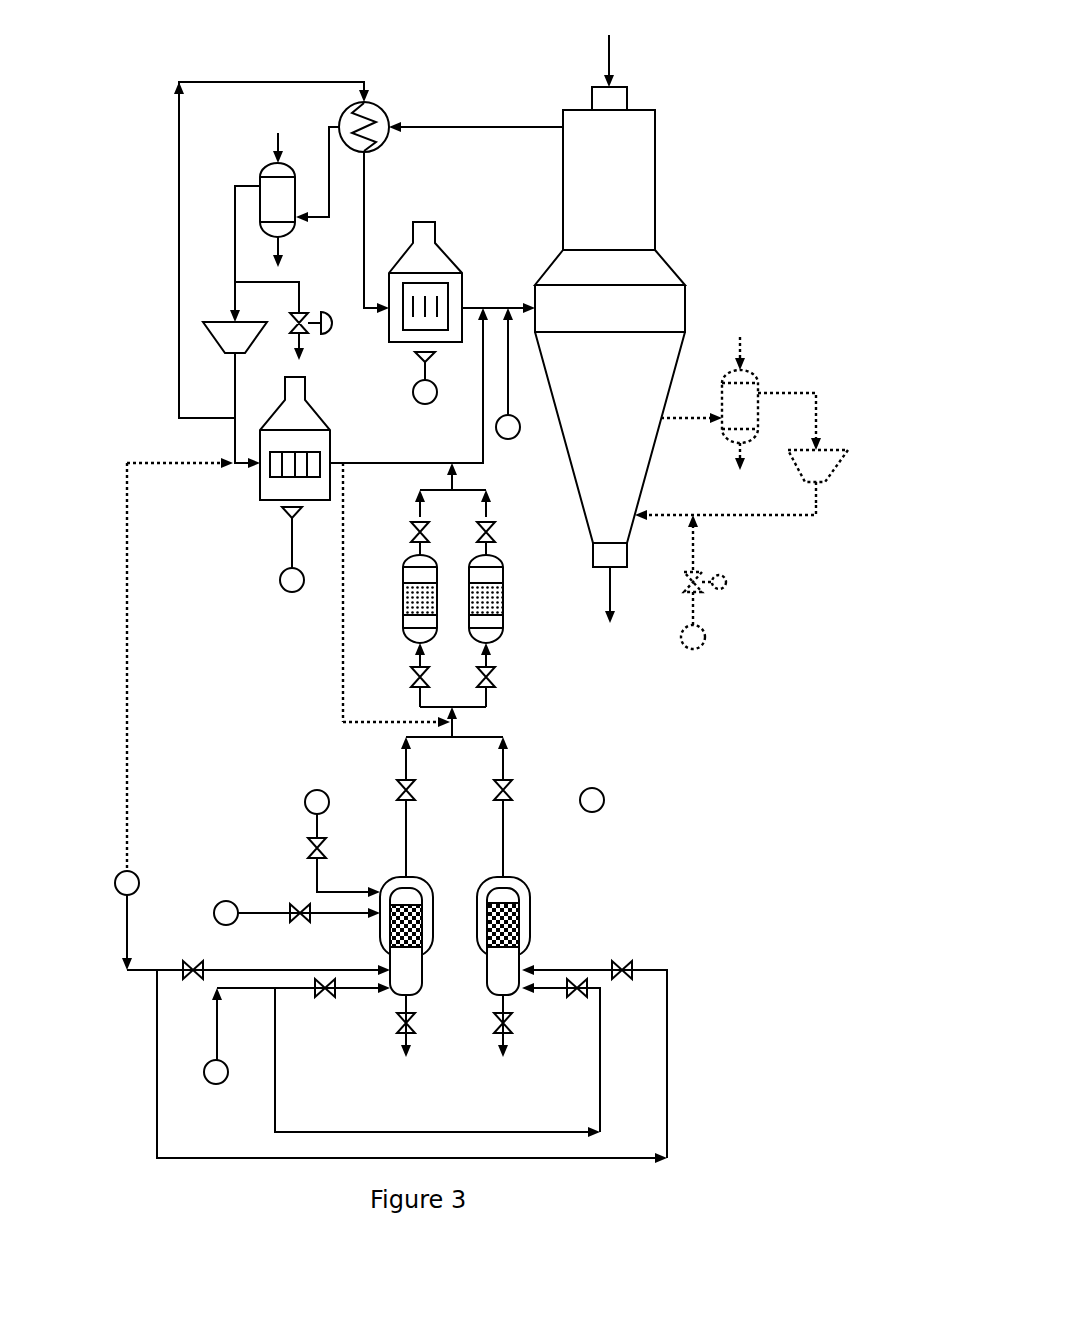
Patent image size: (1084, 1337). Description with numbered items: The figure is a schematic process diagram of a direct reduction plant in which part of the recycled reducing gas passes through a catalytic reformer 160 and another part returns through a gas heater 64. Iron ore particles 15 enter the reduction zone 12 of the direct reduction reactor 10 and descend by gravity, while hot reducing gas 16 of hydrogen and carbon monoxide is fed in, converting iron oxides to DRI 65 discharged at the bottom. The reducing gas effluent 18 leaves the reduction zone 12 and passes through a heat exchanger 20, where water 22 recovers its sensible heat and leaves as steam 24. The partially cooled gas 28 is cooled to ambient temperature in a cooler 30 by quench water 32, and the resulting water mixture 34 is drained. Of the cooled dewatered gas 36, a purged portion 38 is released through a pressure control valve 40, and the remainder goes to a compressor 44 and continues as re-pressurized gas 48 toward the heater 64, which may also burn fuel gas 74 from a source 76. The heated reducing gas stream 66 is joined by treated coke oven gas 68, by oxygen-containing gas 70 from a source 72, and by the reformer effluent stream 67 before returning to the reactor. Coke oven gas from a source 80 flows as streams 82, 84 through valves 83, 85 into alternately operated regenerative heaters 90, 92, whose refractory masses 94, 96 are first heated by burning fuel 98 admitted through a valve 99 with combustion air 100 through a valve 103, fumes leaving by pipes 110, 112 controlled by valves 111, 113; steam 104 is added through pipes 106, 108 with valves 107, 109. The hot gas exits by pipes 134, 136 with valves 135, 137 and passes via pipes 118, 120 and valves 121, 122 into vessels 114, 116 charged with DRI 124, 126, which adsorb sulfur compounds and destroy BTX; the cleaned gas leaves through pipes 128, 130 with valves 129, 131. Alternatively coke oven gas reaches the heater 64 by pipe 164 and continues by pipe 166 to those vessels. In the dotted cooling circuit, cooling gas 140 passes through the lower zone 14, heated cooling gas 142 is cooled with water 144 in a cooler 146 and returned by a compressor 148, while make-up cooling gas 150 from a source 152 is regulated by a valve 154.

The direct reduction reactor 10 is at (629, 327).
The reduction zone 12 is at (630, 207).
The lower zone 14 is at (632, 481).
The iron ore particles 15 is at (612, 62).
The reducing gas 16 is at (518, 300).
The reducing gas effluent 18 is at (430, 122).
The heat exchanger 20 is at (381, 105).
The water 22 is at (360, 80).
The steam 24 is at (366, 236).
The partially cooled reducing gas 28 is at (312, 217).
The cooler 30 is at (292, 167).
The quench water 32 is at (270, 150).
The water mixture 34 is at (280, 242).
The cooled dewatered gas 36 is at (235, 290).
The purged portion 38 is at (305, 343).
The pressure control valve 40 is at (345, 305).
The compressor 44 is at (220, 345).
The re-pressurized gas 48 is at (238, 406).
The gas heater 64 is at (335, 416).
The DRI 65 is at (613, 596).
The heated reducing gas stream 66 is at (480, 340).
The reformer effluent gas stream 67 is at (470, 302).
The treated coke oven gas 68 is at (456, 484).
The oxygen-containing gas 70 is at (511, 370).
The oxygen source 72 is at (517, 434).
The fuel gas stream 74 is at (415, 382).
The fuel gas source 76 is at (422, 403).
The coke oven gas source 80 is at (126, 870).
The coke oven gas stream 82 is at (295, 967).
The valve 83 is at (204, 960).
The coke oven gas stream 84 is at (543, 968).
The valve 85 is at (619, 980).
The regenerative heater 90 is at (386, 918).
The regenerative heater 92 is at (480, 921).
The refractory material 94 is at (390, 927).
The refractory material 96 is at (487, 930).
The fuel 98 is at (305, 803).
The valve 99 is at (306, 858).
The combustion air 100 is at (217, 904).
The valve 103 is at (294, 904).
The steam 104 is at (206, 1076).
The steam pipe 106 is at (289, 992).
The valve 107 is at (338, 996).
The steam pipe 108 is at (601, 1037).
The valve 109 is at (586, 995).
The fumes pipe 110 is at (398, 1050).
The valve 111 is at (440, 1010).
The fumes pipe 112 is at (513, 1043).
The valve 113 is at (496, 1036).
The adsorbent vessel 114 is at (403, 646).
The adsorbent vessel 116 is at (503, 641).
The pipe 118 is at (417, 702).
The pipe 120 is at (488, 710).
The valve 121 is at (409, 671).
The valve 122 is at (496, 673).
The DRI 124 is at (392, 598).
The DRI 126 is at (513, 598).
The pipe 128 is at (410, 533).
The valve 129 is at (405, 558).
The pipe 130 is at (496, 532).
The valve 131 is at (513, 567).
The pipe 134 is at (404, 847).
The valve 135 is at (440, 782).
The pipe 136 is at (505, 852).
The valve 137 is at (538, 782).
The cooling gas 140 is at (660, 515).
The heated cooling gas 142 is at (697, 421).
The cooling water 144 is at (737, 352).
The cooler 146 is at (760, 375).
The compressor 148 is at (835, 476).
The make-up cooling gas stream 150 is at (697, 607).
The cooling gas source 152 is at (701, 644).
The valve 154 is at (706, 568).
The catalytic reformer 160 is at (450, 272).
The pipe 164 is at (133, 622).
The pipe 166 is at (338, 645).